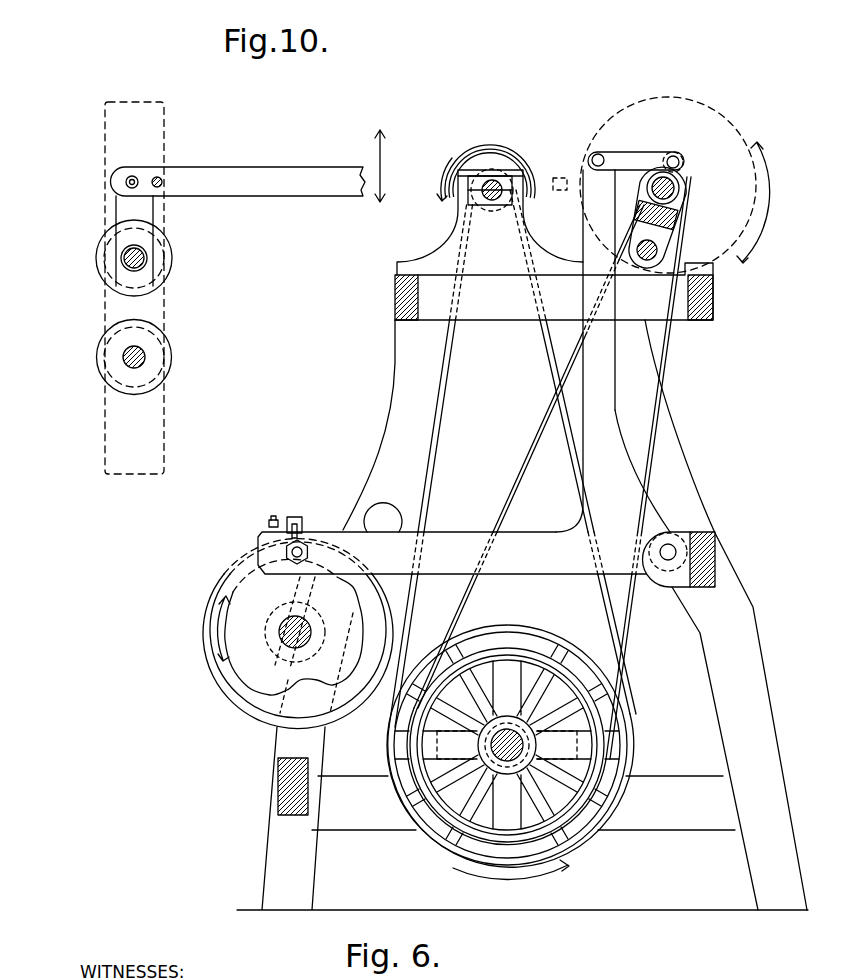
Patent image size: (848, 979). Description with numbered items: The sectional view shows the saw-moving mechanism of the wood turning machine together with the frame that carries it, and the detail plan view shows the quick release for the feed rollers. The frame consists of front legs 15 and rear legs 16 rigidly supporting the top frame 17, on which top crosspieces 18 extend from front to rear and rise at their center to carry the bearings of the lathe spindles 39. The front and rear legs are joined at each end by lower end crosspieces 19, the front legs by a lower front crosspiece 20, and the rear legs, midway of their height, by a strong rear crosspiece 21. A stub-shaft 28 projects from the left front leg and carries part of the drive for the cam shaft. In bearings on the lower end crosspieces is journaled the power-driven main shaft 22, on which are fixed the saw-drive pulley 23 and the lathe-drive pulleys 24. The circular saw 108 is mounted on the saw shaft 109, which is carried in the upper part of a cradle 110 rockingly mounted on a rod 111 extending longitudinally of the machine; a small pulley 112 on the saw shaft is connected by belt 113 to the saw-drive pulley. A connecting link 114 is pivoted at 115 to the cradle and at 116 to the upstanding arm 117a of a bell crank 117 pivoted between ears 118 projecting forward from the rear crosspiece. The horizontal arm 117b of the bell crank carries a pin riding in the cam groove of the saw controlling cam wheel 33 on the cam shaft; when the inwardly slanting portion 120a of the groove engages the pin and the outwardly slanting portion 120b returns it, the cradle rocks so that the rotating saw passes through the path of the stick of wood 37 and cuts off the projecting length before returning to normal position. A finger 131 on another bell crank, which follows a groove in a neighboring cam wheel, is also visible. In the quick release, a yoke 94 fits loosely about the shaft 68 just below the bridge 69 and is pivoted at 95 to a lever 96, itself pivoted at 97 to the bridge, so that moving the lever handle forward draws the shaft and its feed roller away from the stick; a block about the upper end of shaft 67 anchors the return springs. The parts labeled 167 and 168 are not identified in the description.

In FIG. 6, the front legs 15 is at (522, 818).
In FIG. 6, the rear legs 16 is at (726, 615).
In FIG. 6, the top frame 17 is at (715, 296).
In FIG. 6, the top crosspieces 18 is at (438, 245).
In FIG. 6, the lower end crosspieces 19 is at (523, 803).
In FIG. 6, the lower front crosspiece 20 is at (285, 815).
In FIG. 6, the rear crosspiece 21 is at (700, 555).
In FIG. 6, the main shaft 22 is at (507, 763).
In FIG. 6, the saw-drive pulley 23 is at (502, 657).
In FIG. 6, the lathe-drive pulleys 24 is at (557, 640).
In FIG. 6, the stub-shaft 28 is at (380, 503).
In FIG. 6, the saw controlling cam wheel 33 is at (243, 713).
In FIG. 6, the stick of wood 37 is at (553, 178).
In FIG. 6, the lathe spindles 39 is at (494, 199).
In FIG. 10, the shaft 67 is at (146, 354).
In FIG. 10, the shaft 68 is at (143, 256).
In FIG. 10, the bridge 69 is at (115, 127).
In FIG. 10, the yoke 94 is at (130, 210).
In FIG. 10, the pivot 95 is at (126, 181).
In FIG. 10, the lever 96 is at (227, 175).
In FIG. 10, the pivot 97 is at (161, 177).
In FIG. 6, the circular saw 108 is at (734, 119).
In FIG. 6, the saw shaft 109 is at (677, 187).
In FIG. 6, the cradle 110 is at (687, 221).
In FIG. 6, the rod 111 is at (658, 249).
In FIG. 6, the small pulley 112 is at (688, 214).
In FIG. 6, the belt 113 is at (668, 372).
In FIG. 6, the connecting link 114 is at (630, 156).
In FIG. 6, the pivot 115 is at (676, 158).
In FIG. 6, the pivot 116 is at (594, 153).
In FIG. 6, the bell crank 117 is at (590, 351).
In FIG. 6, the upstanding arm 117a is at (603, 290).
In FIG. 6, the horizontal arm 117b is at (452, 553).
In FIG. 6, the ears 118 is at (683, 532).
In FIG. 6, the inwardly slanting portion of cam groove 120a is at (280, 697).
In FIG. 6, the outwardly slanting portion of cam groove 120b is at (323, 687).
In FIG. 6, the finger 131 is at (305, 621).
In FIG. 6, the clamp 167 is at (300, 530).
In FIG. 6, the pulley 168 is at (472, 150).